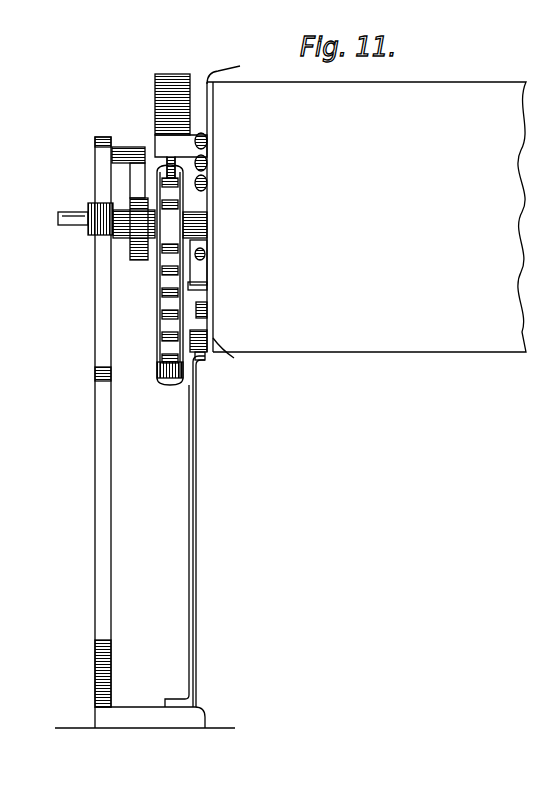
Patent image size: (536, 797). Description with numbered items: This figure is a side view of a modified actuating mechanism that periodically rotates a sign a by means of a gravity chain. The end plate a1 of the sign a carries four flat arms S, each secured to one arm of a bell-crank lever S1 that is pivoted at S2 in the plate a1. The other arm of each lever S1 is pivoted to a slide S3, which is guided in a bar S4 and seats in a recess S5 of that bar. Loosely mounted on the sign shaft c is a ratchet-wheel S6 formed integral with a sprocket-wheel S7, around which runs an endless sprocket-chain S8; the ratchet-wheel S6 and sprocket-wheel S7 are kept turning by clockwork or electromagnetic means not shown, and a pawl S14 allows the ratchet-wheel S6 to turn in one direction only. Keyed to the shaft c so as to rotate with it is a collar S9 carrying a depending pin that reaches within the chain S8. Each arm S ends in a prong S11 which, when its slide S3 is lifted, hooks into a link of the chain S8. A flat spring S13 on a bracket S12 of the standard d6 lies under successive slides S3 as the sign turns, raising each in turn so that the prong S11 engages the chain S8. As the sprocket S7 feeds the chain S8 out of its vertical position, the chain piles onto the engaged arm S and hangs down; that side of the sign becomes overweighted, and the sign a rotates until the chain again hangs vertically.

The sign a is at (345, 352).
The plate a1 is at (232, 218).
The shaft c is at (58, 222).
The standard d6 is at (95, 580).
The flat arm S is at (157, 94).
The bell-crank lever S1 is at (206, 163).
The pivot S2 is at (206, 141).
The slide S3 is at (208, 268).
The bar S4 is at (207, 310).
The recess S5 is at (206, 184).
The ratchet-wheel S6 is at (135, 262).
The sprocket-wheel S7 is at (155, 250).
The sprocket-chain S8 is at (157, 372).
The collar S9 is at (112, 235).
The prong S11 is at (167, 170).
The bracket S12 is at (196, 492).
The flat spring S13 is at (205, 358).
The pawl S14 is at (138, 158).